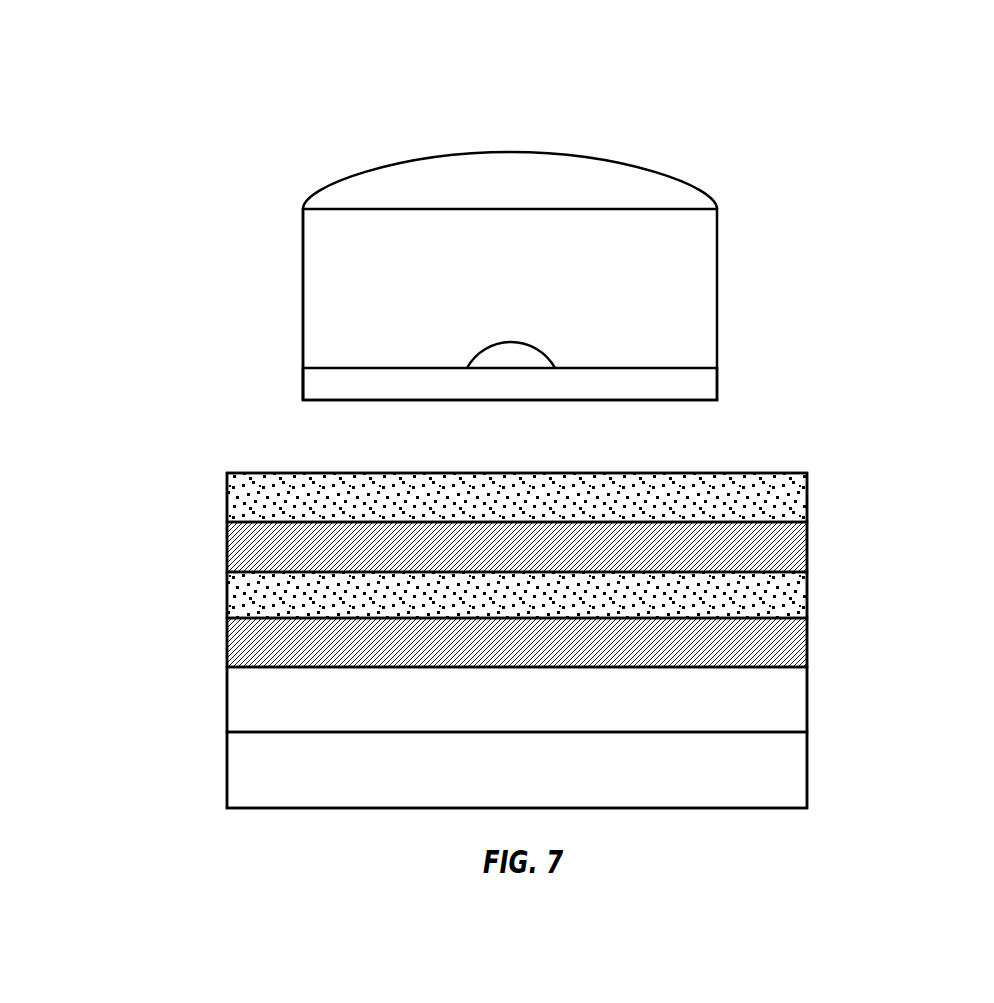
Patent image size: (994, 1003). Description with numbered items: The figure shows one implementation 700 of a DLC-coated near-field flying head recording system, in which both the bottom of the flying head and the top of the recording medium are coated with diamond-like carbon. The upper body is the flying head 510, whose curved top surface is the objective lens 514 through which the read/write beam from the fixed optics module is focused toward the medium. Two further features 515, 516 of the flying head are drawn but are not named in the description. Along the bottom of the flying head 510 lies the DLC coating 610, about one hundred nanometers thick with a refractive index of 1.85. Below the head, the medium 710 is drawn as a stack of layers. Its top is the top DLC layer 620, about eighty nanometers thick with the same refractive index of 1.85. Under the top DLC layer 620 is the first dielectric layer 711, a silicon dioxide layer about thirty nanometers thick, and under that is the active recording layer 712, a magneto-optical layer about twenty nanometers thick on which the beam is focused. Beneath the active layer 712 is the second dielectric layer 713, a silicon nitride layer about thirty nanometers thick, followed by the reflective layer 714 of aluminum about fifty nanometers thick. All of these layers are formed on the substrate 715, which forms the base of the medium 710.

The DLC-coated near-field flying head recording system 700 is at (534, 42).
The flying head 510 is at (511, 248).
The objective lens 514 is at (665, 170).
The protrusion / bump 515 is at (537, 350).
The side wall 516 is at (303, 288).
The DLC coating 610 is at (717, 350).
The top DLC layer 620 is at (807, 483).
The medium 710 is at (459, 633).
The first dielectric layer 711 is at (227, 552).
The active recording layer 712 is at (227, 605).
The second dielectric layer 713 is at (227, 652).
The reflective layer 714 is at (807, 680).
The substrate 715 is at (807, 765).